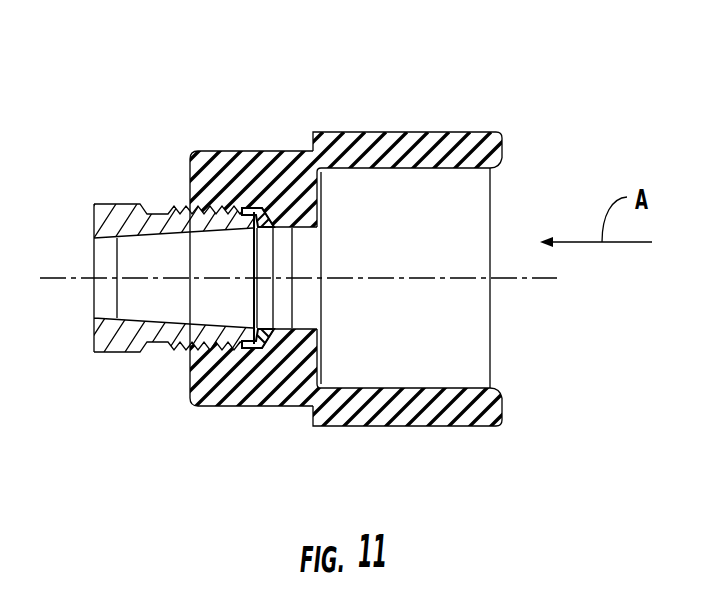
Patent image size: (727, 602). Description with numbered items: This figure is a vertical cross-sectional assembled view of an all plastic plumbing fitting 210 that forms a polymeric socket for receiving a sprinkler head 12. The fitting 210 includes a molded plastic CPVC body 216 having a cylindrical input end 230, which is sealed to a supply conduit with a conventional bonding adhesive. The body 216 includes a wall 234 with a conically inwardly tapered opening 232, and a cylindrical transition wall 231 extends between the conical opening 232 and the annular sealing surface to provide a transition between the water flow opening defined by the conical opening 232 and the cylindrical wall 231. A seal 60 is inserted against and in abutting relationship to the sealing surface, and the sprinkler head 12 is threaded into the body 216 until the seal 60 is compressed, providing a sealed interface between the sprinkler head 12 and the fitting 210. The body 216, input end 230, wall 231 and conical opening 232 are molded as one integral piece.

The sprinkler head 12 is at (94, 197).
The seal 60 is at (252, 266).
The plumbing fitting 210 is at (255, 96).
The CPVC body 216 is at (267, 407).
The cylindrical input end 230 is at (506, 416).
The cylindrical transition wall 231 is at (278, 234).
The conically inwardly tapered opening 232 is at (307, 265).
The wall 234 is at (315, 358).